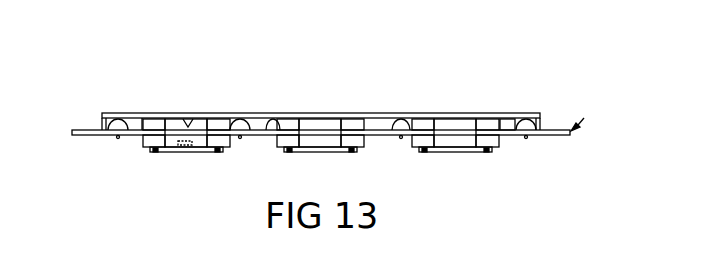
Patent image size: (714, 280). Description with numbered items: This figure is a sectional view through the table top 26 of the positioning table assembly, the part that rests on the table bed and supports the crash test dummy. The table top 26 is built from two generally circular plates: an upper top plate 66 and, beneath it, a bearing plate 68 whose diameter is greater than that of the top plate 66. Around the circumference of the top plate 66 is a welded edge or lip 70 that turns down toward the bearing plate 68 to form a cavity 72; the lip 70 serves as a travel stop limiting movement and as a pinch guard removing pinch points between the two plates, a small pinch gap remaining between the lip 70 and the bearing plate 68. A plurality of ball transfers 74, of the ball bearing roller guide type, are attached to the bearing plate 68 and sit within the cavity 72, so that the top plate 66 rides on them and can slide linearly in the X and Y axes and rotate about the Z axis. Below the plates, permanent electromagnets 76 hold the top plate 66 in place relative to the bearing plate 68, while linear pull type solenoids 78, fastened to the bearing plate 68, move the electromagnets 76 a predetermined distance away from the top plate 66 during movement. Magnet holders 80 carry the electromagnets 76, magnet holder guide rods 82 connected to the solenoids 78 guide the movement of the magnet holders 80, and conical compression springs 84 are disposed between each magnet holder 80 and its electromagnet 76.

The table top 26 is at (584, 118).
The top plate 66 is at (140, 113).
The bearing plate 68 is at (82, 135).
The lip 70 is at (540, 121).
The cavity 72 is at (506, 118).
The ball transfers 74 is at (112, 119).
The permanent electromagnets 76 is at (455, 148).
The solenoids 78 is at (500, 141).
The magnet holders 80 is at (467, 152).
The magnet holder guide rods 82 is at (424, 152).
The springs 84 is at (185, 152).